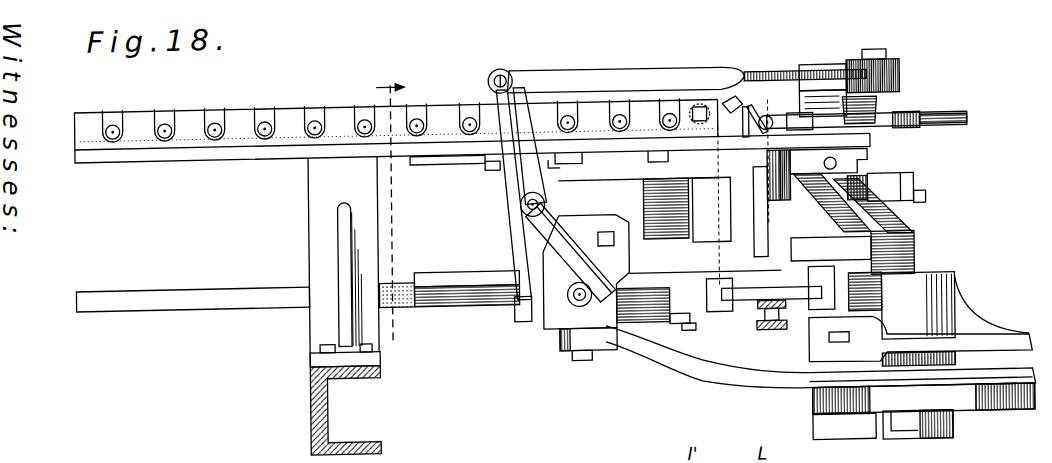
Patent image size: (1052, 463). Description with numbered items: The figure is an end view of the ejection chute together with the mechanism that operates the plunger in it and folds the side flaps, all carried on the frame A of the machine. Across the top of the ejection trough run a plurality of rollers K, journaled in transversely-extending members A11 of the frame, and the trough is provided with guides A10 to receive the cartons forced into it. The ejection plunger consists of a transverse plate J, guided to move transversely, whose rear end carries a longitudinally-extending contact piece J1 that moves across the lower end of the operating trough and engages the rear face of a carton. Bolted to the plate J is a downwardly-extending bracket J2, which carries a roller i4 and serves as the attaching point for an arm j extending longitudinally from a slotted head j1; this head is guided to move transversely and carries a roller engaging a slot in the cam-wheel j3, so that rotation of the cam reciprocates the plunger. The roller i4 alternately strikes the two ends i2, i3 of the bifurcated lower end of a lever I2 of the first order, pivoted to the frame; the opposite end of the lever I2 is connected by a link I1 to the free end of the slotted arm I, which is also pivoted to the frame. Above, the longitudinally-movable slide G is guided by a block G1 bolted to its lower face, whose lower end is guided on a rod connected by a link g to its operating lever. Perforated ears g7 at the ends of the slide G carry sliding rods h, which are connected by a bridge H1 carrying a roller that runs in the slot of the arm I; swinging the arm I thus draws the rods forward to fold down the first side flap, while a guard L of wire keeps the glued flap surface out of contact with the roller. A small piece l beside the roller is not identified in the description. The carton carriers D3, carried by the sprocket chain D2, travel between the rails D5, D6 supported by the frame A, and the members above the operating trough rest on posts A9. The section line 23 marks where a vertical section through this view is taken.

The rollers K is at (167, 117).
The section line 23 is at (391, 211).
The transversely-extending members A11 is at (150, 166).
The guides A10 is at (233, 298).
The frame A is at (322, 419).
The link I1 is at (680, 80).
The lever I2 is at (514, 195).
The end of lever i2 is at (520, 335).
The rear end of lever i3 is at (602, 342).
The roller i4 is at (568, 313).
The transverse plate J is at (698, 228).
The contact piece J1 is at (633, 164).
The bracket J2 is at (586, 272).
The rail D5 is at (716, 318).
The sprocket chain D2 is at (775, 350).
The arm j is at (727, 384).
The slotted head j1 is at (1005, 392).
The cam-wheel j3 is at (924, 412).
The posts A9 is at (913, 277).
The carton carriers D3 is at (857, 263).
The rail D6 is at (820, 311).
The guard L is at (724, 127).
The slotted arm I is at (828, 80).
The bridge H1 is at (908, 106).
The slide G is at (917, 134).
The hook l is at (770, 129).
The rods h is at (950, 146).
The perforated ears g7 is at (905, 146).
The block G1 is at (850, 196).
The link g is at (890, 209).